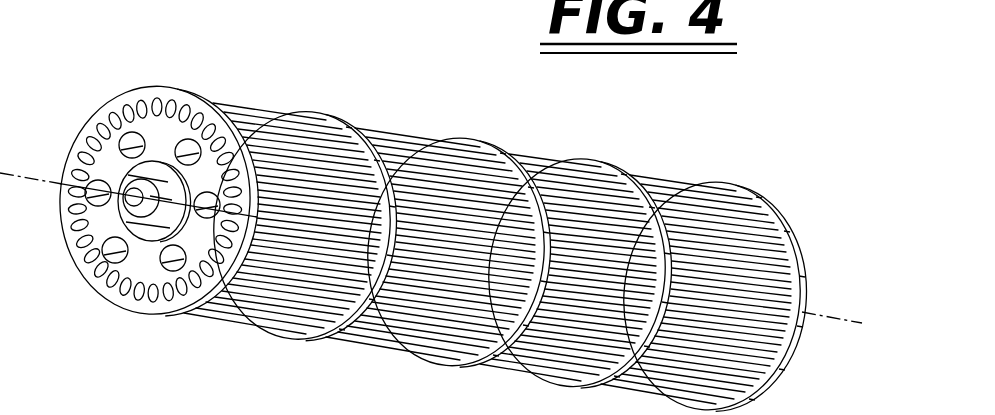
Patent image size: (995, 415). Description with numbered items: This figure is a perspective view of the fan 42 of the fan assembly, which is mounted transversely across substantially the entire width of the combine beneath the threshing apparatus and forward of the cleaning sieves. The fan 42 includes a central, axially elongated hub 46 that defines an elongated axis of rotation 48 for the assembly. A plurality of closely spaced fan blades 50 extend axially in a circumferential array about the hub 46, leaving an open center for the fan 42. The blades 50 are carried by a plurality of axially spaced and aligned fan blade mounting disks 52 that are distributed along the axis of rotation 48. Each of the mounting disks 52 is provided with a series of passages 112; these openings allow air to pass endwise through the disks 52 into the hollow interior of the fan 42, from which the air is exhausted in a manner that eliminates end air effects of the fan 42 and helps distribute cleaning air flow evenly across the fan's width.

The fan 42 is at (398, 113).
The hub 46 is at (124, 206).
The axis of rotation 48 is at (30, 170).
The fan blades 50 is at (574, 188).
The fan blade mounting disks 52 is at (176, 92).
The passages 112 is at (120, 130).